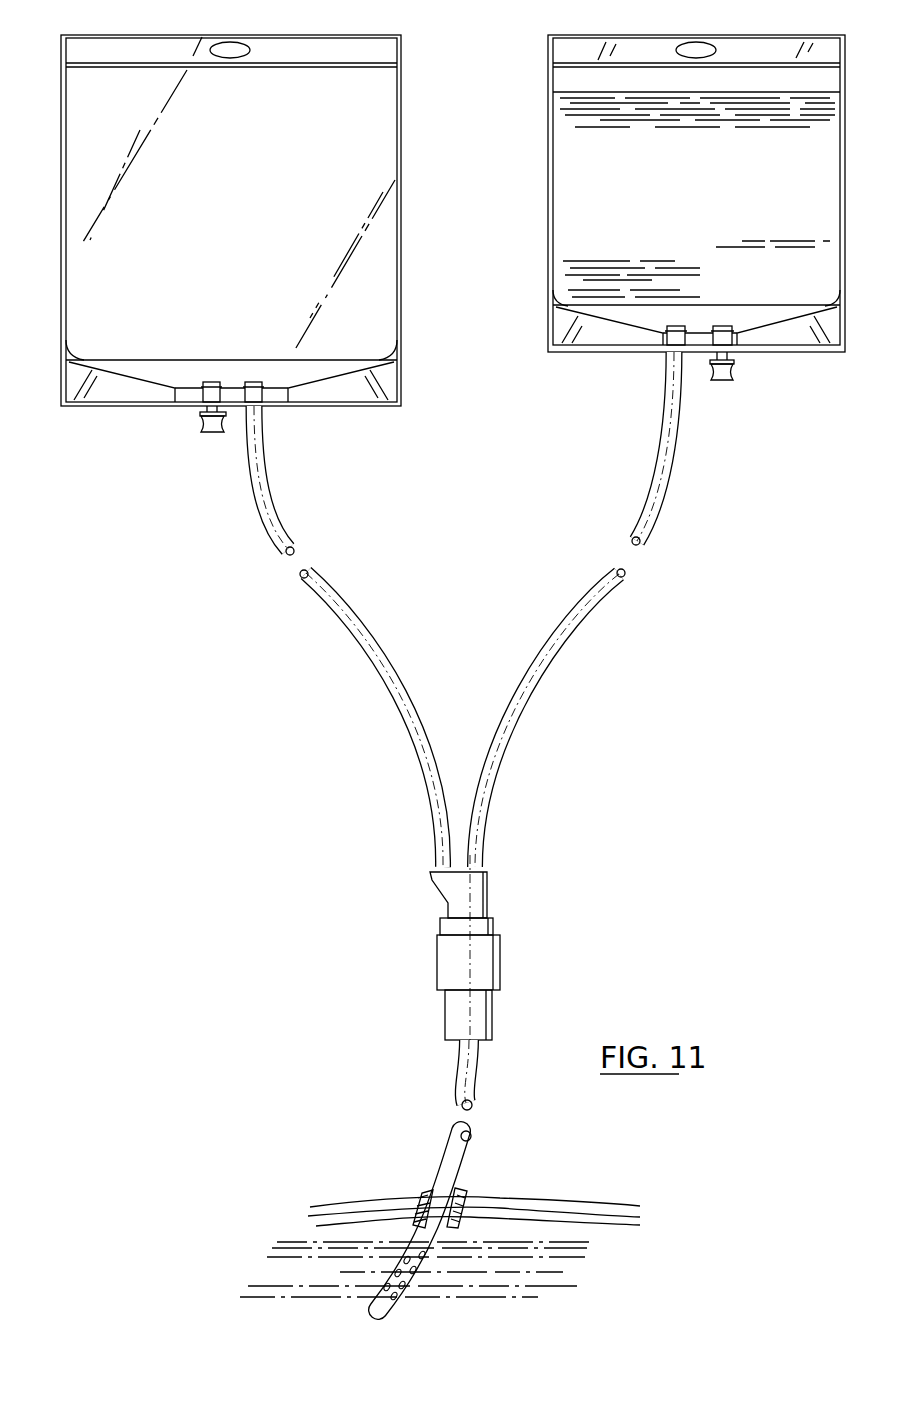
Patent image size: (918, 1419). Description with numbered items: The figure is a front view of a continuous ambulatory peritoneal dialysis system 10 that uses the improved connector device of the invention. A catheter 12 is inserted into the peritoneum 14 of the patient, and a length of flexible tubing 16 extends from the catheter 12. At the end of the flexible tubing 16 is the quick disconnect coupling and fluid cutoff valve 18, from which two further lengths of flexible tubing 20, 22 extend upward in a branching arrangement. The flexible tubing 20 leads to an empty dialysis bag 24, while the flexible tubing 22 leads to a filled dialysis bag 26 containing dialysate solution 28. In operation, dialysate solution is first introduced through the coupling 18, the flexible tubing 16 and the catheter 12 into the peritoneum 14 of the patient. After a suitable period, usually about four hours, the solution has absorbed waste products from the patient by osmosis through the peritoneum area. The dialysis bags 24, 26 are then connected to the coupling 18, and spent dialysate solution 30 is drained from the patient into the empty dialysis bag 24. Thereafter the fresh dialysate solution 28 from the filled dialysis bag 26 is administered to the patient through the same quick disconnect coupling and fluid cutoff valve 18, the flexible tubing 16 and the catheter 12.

The continuous ambulatory peritoneal dialysis system 10 is at (475, 947).
The catheter 12 is at (442, 1224).
The peritoneum of the patient 14 is at (583, 1203).
The flexible tubing 16 is at (456, 1072).
The quick disconnect coupling and fluid cutoff valve 18 is at (437, 968).
The flexible tubing 20 is at (357, 641).
The flexible tubing 22 is at (556, 656).
The empty dialysis bag 24 is at (402, 310).
The filled dialysis bag 26 is at (663, 207).
The dialysate solution 28 is at (726, 226).
The spent dialysate solution 30 is at (338, 1272).